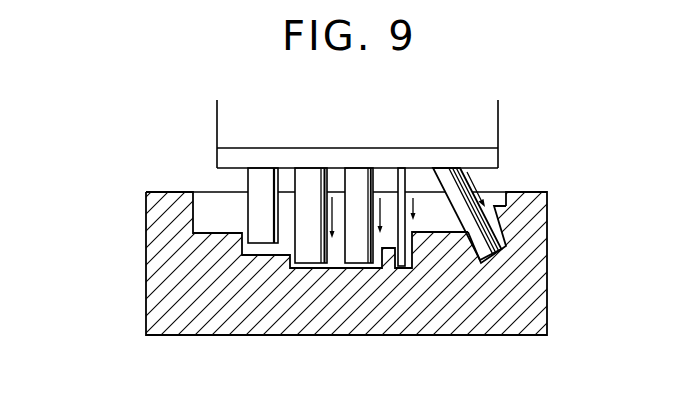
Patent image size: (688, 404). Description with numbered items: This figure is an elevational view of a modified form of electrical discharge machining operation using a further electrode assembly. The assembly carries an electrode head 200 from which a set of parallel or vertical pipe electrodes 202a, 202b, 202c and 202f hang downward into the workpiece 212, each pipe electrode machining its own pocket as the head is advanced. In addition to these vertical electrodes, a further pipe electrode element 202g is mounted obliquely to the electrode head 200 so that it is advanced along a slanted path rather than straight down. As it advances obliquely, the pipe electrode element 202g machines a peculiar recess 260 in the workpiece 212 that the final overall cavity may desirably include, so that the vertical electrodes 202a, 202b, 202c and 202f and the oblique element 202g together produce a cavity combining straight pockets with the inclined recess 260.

The electrode head 200 is at (228, 122).
The pipe electrode 202a is at (252, 205).
The pipe electrode 202b is at (308, 178).
The pipe electrode 202c is at (356, 263).
The pipe electrode 202f is at (401, 177).
The pipe electrode element 202g is at (494, 214).
The lower block 212 is at (155, 275).
The recess 260 is at (500, 233).